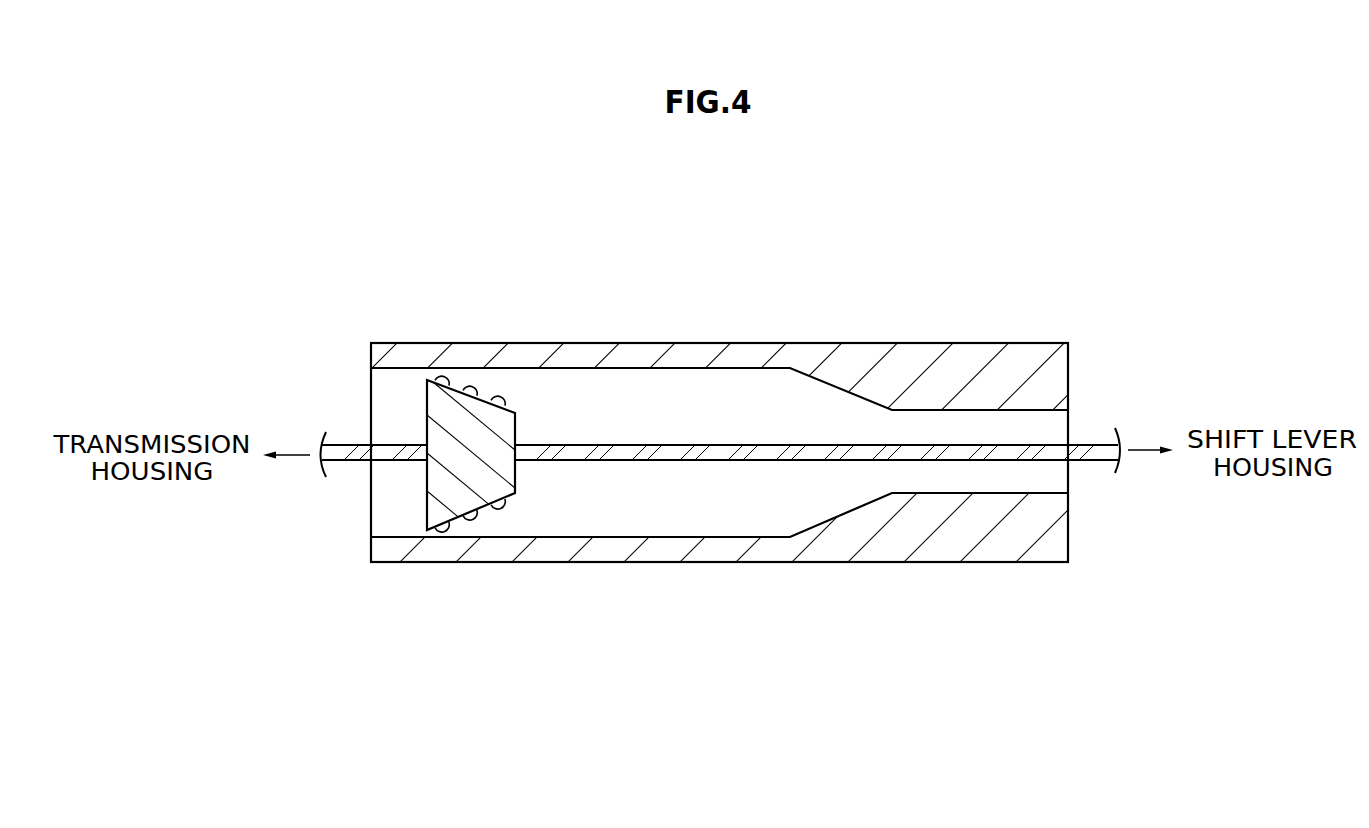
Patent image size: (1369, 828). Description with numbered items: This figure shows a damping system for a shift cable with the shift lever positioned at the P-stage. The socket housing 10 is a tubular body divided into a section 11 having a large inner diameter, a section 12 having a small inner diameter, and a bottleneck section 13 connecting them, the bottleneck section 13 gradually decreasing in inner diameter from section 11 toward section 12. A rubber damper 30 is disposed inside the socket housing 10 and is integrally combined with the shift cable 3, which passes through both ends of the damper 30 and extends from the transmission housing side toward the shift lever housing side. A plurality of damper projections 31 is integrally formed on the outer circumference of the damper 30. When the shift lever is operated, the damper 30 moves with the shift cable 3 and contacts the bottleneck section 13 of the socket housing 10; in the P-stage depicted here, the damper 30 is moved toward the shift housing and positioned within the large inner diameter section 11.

The shift cable 3 is at (721, 419).
The socket housing 10 is at (734, 504).
The section having a large inner diameter 11 is at (790, 368).
The section having a small inner diameter 12 is at (1068, 343).
The bottleneck section 13 is at (892, 410).
The rubber damper 30 is at (433, 483).
The damper projections 31 is at (485, 464).